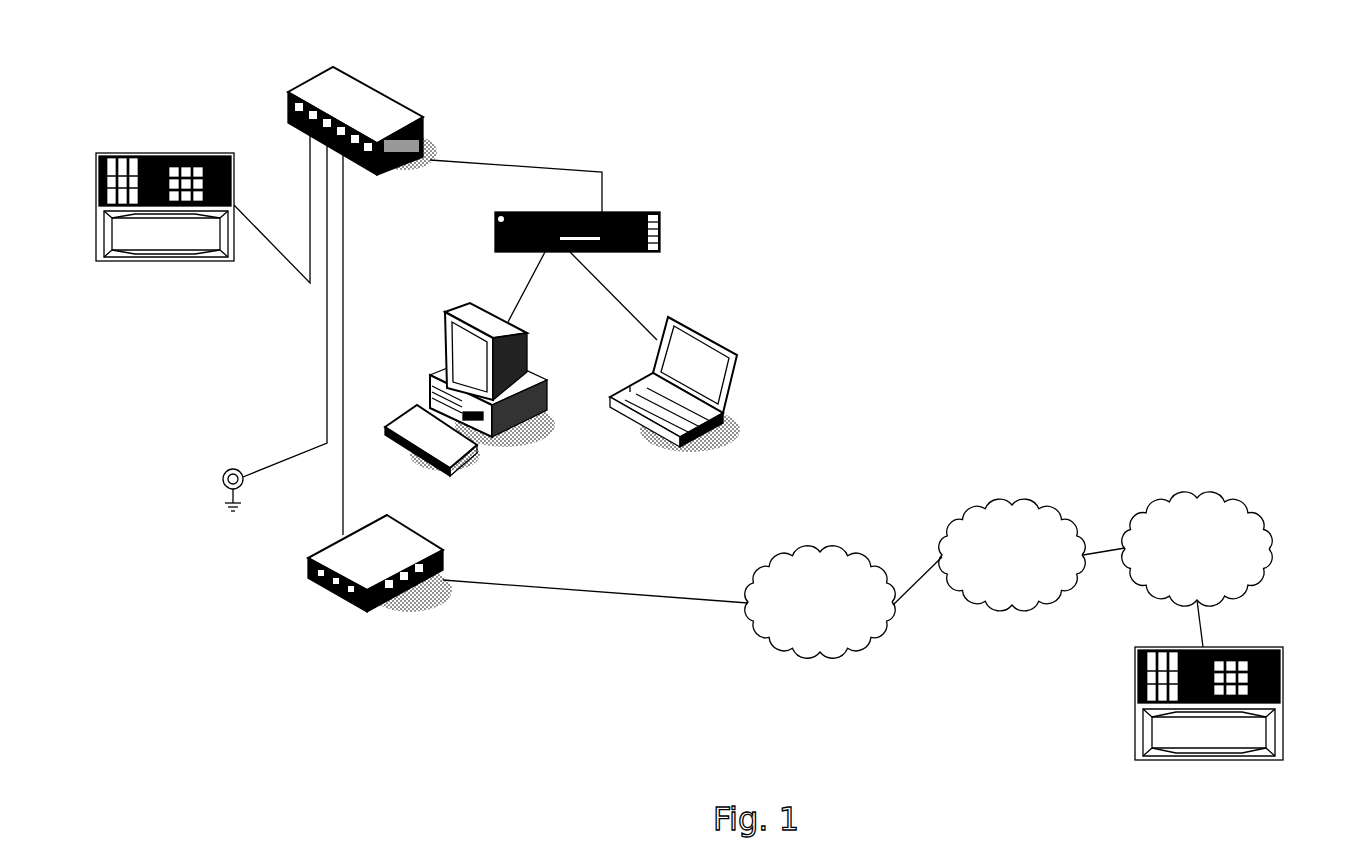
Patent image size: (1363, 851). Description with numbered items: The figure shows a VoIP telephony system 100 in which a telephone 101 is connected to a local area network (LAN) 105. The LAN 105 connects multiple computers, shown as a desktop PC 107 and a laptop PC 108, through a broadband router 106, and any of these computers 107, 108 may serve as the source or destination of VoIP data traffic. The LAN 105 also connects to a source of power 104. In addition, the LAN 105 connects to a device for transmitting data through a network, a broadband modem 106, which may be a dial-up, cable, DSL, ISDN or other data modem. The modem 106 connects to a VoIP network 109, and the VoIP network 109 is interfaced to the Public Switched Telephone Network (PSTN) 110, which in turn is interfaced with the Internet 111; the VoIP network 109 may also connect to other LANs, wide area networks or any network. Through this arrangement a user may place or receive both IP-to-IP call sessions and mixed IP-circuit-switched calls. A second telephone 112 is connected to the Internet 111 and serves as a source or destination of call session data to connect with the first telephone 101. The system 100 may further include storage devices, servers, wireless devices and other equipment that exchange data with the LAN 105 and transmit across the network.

The VoIP telephony system 100 is at (574, 101).
The telephone 101 is at (110, 265).
The source of power 104 is at (224, 467).
The local area network (LAN) 105 is at (333, 62).
The broadband router / broadband modem 106 is at (627, 210).
The desktop PC 107 is at (533, 423).
The laptop PC 108 is at (725, 424).
The VoIP network 109 is at (745, 603).
The Public Switched Telephone Network (PSTN) 110 is at (1012, 610).
The Internet 111 is at (1276, 550).
The second telephone 112 is at (1132, 703).